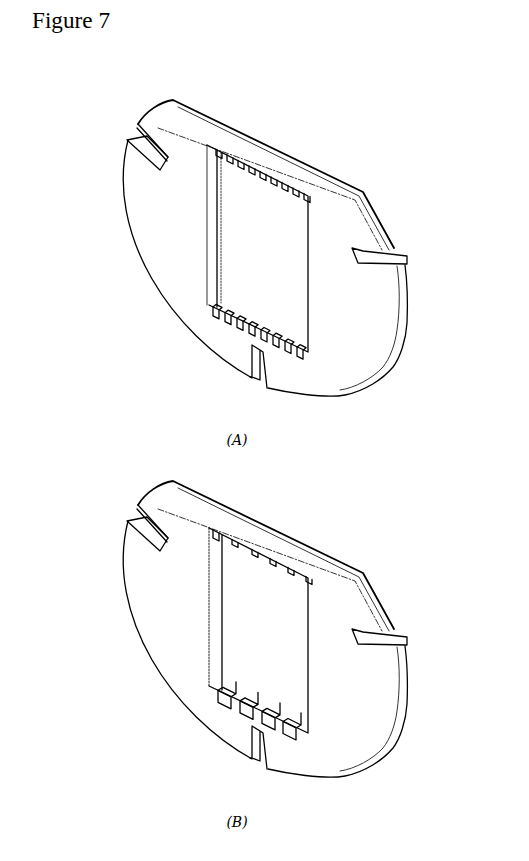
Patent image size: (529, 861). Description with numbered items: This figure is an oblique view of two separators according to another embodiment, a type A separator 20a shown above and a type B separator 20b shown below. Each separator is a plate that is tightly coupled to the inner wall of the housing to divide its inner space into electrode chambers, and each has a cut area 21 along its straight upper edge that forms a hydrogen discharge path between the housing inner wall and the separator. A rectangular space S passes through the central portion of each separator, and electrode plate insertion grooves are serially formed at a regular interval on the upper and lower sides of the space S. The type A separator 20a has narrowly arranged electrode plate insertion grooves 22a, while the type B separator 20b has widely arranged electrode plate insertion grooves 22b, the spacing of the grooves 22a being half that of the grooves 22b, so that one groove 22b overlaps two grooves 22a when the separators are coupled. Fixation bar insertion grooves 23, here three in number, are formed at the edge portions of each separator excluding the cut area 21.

The type A separator 20a is at (128, 287).
The type B separator 20b is at (128, 668).
The cut area 21 is at (268, 145).
The electrode plate insertion grooves of type A separator 22a is at (274, 185).
The electrode plate insertion grooves of type B separator 22b is at (275, 567).
The fixation bar insertion grooves 23 is at (152, 151).
The rectangular space S is at (257, 439).